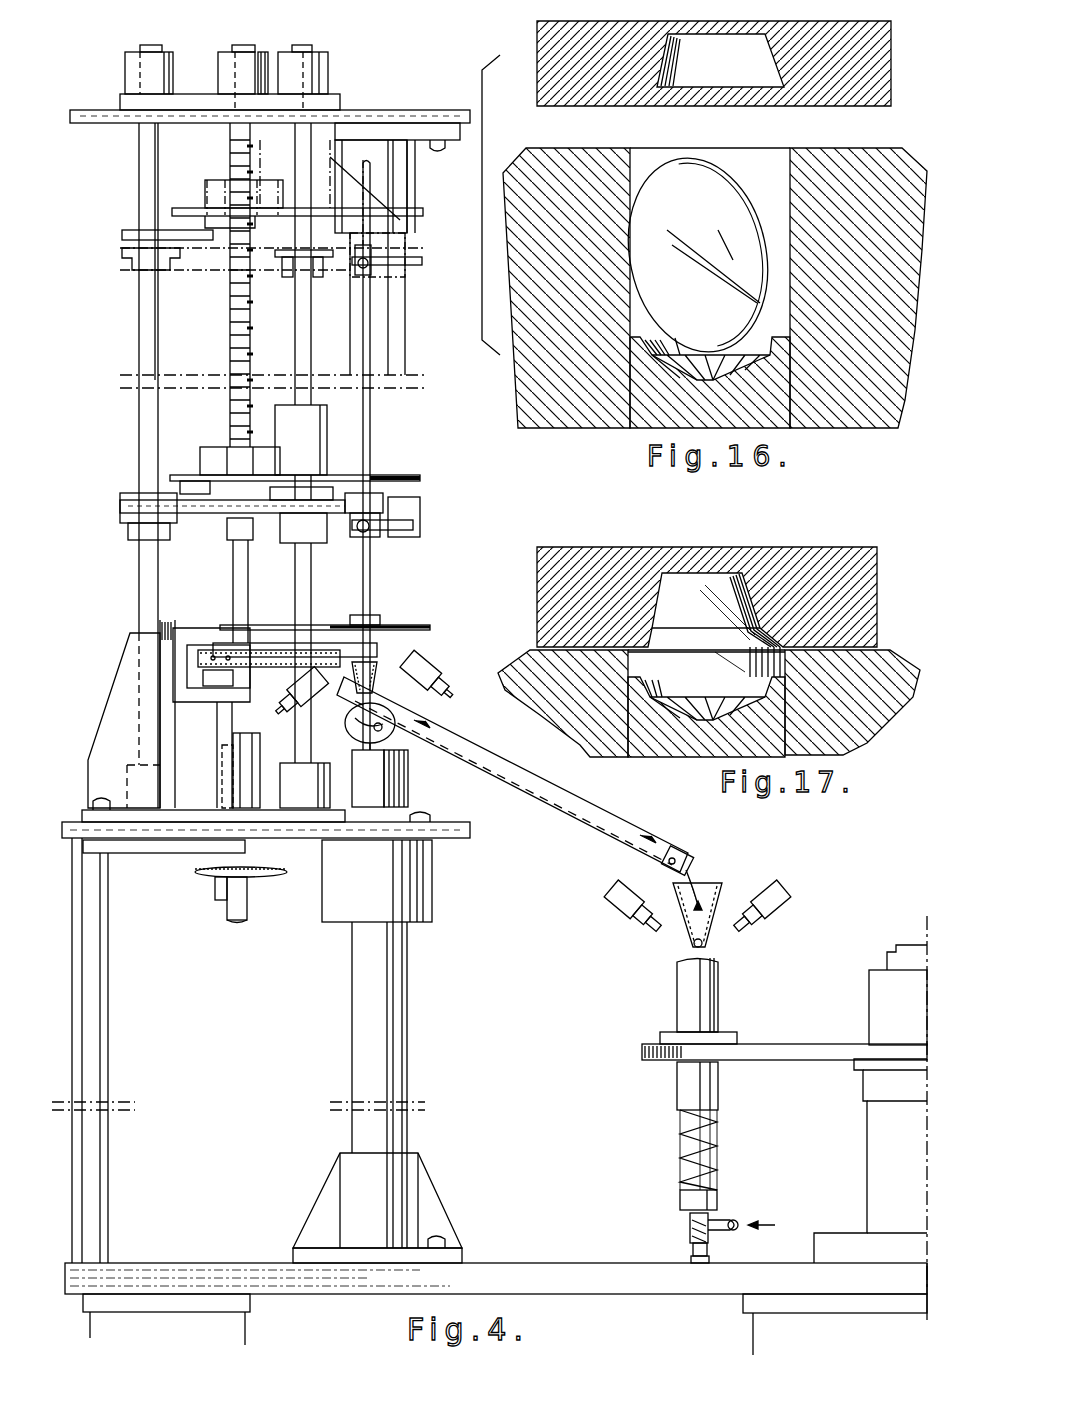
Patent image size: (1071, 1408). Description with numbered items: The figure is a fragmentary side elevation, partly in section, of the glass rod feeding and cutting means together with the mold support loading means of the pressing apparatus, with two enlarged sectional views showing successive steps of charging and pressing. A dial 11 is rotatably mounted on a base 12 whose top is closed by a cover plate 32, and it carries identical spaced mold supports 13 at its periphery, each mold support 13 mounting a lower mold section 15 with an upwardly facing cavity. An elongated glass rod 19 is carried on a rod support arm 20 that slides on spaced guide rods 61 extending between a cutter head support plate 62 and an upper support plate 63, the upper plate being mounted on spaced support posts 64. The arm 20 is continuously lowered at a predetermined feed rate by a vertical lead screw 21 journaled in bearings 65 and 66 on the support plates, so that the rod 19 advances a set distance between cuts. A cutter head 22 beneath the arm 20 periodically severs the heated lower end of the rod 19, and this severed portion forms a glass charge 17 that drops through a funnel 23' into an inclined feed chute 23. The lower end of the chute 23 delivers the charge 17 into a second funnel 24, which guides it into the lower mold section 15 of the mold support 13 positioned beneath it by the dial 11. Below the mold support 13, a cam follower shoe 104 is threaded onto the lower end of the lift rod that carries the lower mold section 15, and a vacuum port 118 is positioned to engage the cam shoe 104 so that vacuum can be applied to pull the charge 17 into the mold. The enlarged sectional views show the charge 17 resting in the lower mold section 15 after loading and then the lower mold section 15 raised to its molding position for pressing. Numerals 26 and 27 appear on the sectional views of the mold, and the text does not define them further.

In FIG. 4, the dial 11 is at (770, 1048).
In FIG. 4, the base 12 is at (487, 1240).
In FIG. 4, the mold support 13 is at (718, 1000).
In FIG. 16, the lower mold section 15 is at (777, 382).
In FIG. 17, the lower mold section 15 is at (773, 728).
In FIG. 4, the glass charge 17 is at (678, 862).
In FIG. 16, the glass charge 17 is at (703, 238).
In FIG. 4, the glass rod 19 is at (365, 437).
In FIG. 4, the rod support arm 20 is at (412, 277).
In FIG. 4, the lead screw 21 is at (232, 349).
In FIG. 4, the cutter head 22 is at (380, 634).
In FIG. 4, the feed chute 23 is at (512, 774).
In FIG. 4, the funnel 23' is at (410, 662).
In FIG. 4, the second funnel 24 is at (723, 885).
In FIG. 16, the die block 26 is at (864, 72).
In FIG. 17, the die block 26 is at (617, 551).
In FIG. 17, the die cavity wall 27 is at (748, 573).
In FIG. 4, the cover plate 32 is at (540, 1272).
In FIG. 4, the guide rod 61 is at (300, 297).
In FIG. 4, the cutter head support plate 62 is at (353, 828).
In FIG. 4, the upper support plate 63 is at (389, 117).
In FIG. 4, the support post 64 is at (357, 1020).
In FIG. 4, the bearing 65 is at (264, 63).
In FIG. 4, the bearing 66 is at (258, 785).
In FIG. 4, the cam follower shoe 104 is at (715, 1198).
In FIG. 4, the vacuum port 118 is at (690, 1226).